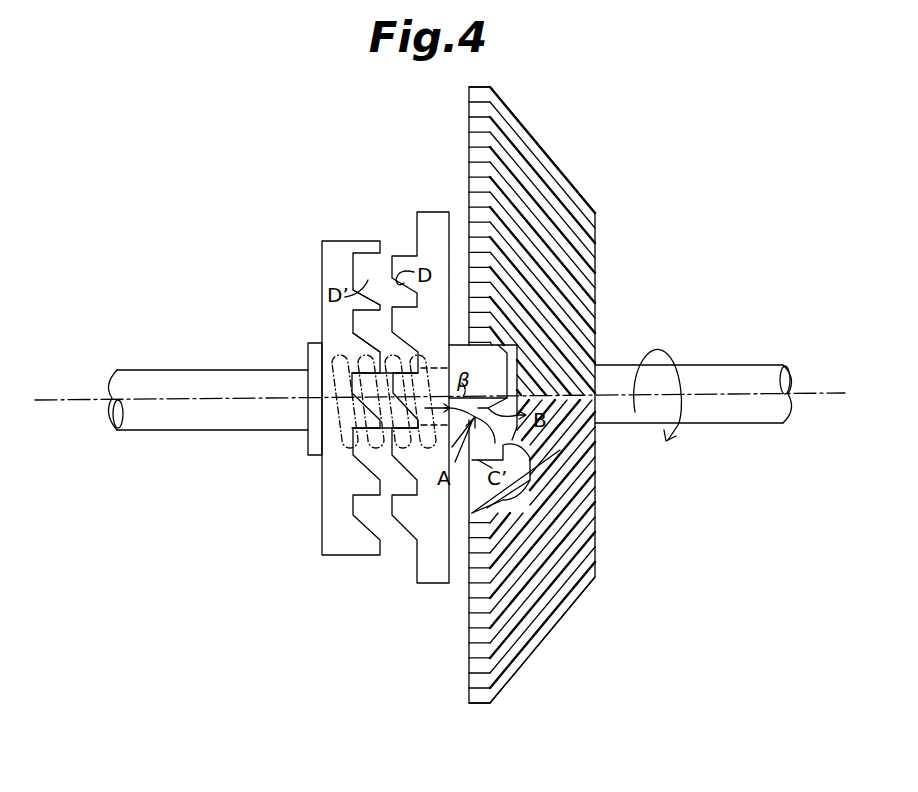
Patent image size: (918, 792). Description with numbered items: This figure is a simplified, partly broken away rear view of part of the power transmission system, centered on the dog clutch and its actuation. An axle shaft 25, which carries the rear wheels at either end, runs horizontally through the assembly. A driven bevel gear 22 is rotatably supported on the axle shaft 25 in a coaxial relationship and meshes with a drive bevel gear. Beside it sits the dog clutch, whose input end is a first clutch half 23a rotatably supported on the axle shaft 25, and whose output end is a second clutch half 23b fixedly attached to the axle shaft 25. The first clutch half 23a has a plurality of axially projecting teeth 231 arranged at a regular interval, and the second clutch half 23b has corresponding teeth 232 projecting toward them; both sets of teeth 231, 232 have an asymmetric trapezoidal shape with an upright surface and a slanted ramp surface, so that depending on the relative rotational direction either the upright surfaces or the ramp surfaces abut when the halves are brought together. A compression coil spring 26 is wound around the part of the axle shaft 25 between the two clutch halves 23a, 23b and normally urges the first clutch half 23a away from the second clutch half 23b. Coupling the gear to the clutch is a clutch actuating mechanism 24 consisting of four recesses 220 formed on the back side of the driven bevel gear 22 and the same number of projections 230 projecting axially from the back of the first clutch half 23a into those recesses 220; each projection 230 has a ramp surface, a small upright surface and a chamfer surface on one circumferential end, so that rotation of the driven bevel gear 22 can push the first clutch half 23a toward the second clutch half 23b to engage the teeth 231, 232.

The driven bevel gear 22 is at (553, 610).
The first clutch half 23a is at (435, 578).
The second clutch half 23b is at (353, 553).
The clutch actuating mechanism 24 is at (460, 250).
The axle shaft 25 is at (235, 418).
The compression coil spring 26 is at (332, 462).
The recess 220 is at (497, 442).
The projection 230 is at (490, 368).
The teeth 231 is at (392, 293).
The teeth 232 is at (386, 304).